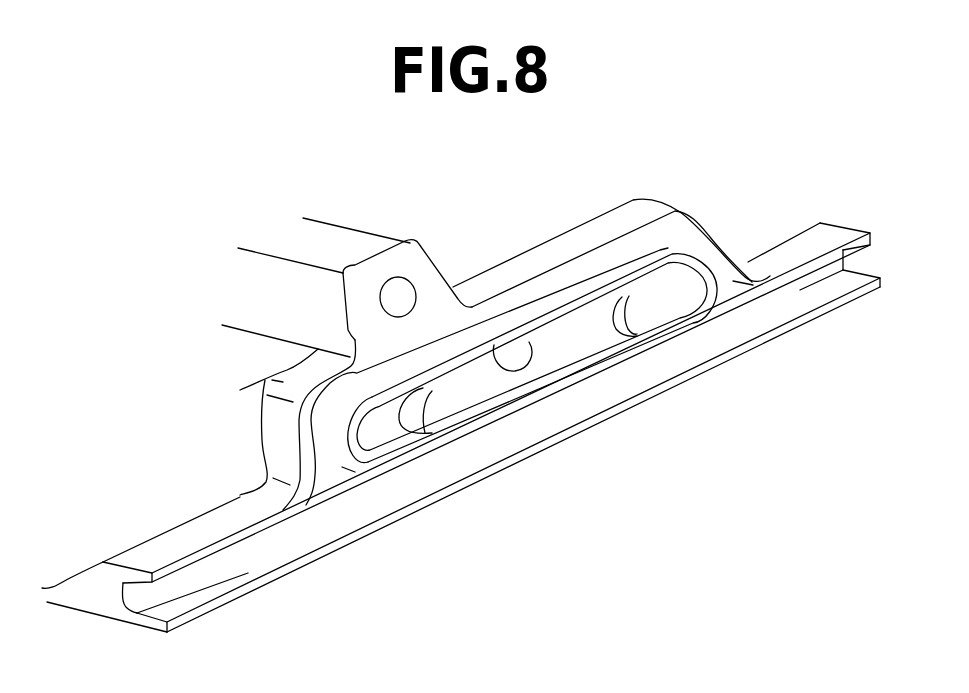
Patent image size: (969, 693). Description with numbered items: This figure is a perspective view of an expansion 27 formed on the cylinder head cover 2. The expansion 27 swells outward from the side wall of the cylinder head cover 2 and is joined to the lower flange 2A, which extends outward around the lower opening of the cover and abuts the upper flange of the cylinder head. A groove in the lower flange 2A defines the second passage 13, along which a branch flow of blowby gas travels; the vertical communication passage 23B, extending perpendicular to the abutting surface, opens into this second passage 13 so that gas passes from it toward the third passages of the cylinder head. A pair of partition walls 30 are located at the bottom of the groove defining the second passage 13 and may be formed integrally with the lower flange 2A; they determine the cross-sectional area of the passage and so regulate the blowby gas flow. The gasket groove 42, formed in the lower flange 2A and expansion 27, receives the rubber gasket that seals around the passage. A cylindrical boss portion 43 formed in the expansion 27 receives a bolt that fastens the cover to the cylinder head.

The cylinder head cover 2 is at (758, 351).
The lower flange 2A is at (176, 538).
The gasket groove 42 is at (260, 556).
The second passage 13 is at (590, 342).
The vertical communication passage 23B is at (512, 368).
The partition wall 30 is at (432, 434).
The expansion 27 is at (265, 380).
The boss portion 43 is at (407, 242).